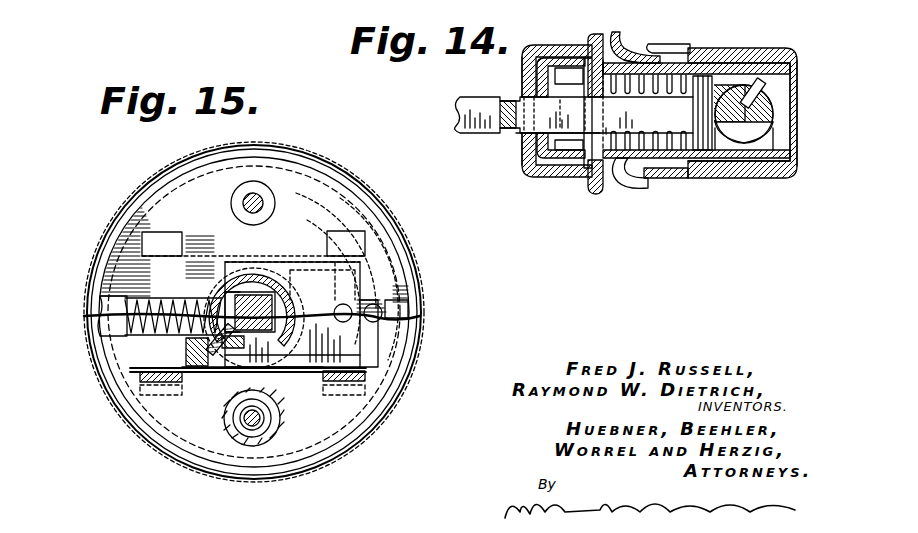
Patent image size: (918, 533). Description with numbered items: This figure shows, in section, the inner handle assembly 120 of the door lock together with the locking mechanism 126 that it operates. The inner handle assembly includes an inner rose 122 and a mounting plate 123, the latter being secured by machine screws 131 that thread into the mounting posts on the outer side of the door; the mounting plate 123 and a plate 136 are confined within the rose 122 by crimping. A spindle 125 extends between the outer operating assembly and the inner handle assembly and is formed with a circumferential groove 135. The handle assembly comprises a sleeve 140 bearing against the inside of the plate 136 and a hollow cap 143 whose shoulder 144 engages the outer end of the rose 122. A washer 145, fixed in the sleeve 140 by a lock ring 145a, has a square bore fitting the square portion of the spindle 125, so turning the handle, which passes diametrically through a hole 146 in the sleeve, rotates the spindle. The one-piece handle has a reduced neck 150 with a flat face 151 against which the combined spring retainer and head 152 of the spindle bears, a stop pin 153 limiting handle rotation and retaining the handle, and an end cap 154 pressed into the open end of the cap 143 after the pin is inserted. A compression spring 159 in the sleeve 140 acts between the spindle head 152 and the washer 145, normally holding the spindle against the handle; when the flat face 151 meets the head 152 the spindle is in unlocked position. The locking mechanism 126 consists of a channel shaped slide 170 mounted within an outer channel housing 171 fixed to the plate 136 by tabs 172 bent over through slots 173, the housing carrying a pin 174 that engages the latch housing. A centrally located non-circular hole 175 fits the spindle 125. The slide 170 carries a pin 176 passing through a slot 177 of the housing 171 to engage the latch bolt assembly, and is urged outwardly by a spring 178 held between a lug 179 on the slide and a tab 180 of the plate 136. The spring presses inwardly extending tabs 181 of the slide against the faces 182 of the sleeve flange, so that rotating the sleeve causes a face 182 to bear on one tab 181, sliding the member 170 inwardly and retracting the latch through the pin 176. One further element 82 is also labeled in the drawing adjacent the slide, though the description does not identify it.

In FIG. 14, the pin 82 is at (585, 168).
In FIG. 14, the inner handle assembly 120 is at (788, 50).
In FIG. 14, the inner rose 122 is at (666, 44).
In FIG. 15, the inner rose 122 is at (372, 321).
In FIG. 14, the mounting plate 123 is at (634, 58).
In FIG. 14, the spindle 125 is at (482, 134).
In FIG. 15, the spindle 125 is at (288, 301).
In FIG. 14, the locking mechanism 126 is at (609, 24).
In FIG. 15, the locking mechanism 126 is at (278, 290).
In FIG. 15, the machine screws 131 is at (264, 203).
In FIG. 14, the circumferential groove 135 is at (508, 99).
In FIG. 14, the plate 136 is at (600, 194).
In FIG. 15, the plate 136 is at (372, 204).
In FIG. 14, the sleeve 140 is at (740, 62).
In FIG. 15, the sleeve 140 is at (300, 371).
In FIG. 14, the hollow cap 143 is at (742, 178).
In FIG. 14, the shoulder 144 is at (680, 178).
In FIG. 14, the washer 145 is at (606, 96).
In FIG. 15, the washer 145 is at (343, 304).
In FIG. 14, the lock ring 145a is at (620, 32).
In FIG. 15, the lock ring 145a is at (228, 281).
In FIG. 14, the hole 146 is at (772, 135).
In FIG. 14, the reduced neck 150 is at (770, 102).
In FIG. 14, the flat face 151 is at (770, 125).
In FIG. 14, the combined spring retainer and head 152 is at (713, 62).
In FIG. 14, the stop pin 153 is at (770, 80).
In FIG. 14, the end cap 154 is at (796, 156).
In FIG. 14, the compression spring 159 is at (650, 182).
In FIG. 14, the channel shaped slide 170 is at (545, 178).
In FIG. 15, the channel shaped slide 170 is at (355, 351).
In FIG. 14, the outer channel housing 171 is at (526, 177).
In FIG. 15, the outer channel housing 171 is at (380, 327).
In FIG. 14, the tabs 172 is at (596, 34).
In FIG. 15, the tabs 172 is at (170, 234).
In FIG. 15, the slots 173 is at (160, 254).
In FIG. 15, the pin 174 is at (410, 299).
In FIG. 14, the non-circular hole 175 is at (520, 135).
In FIG. 15, the pin 176 is at (386, 283).
In FIG. 15, the slot 177 is at (388, 267).
In FIG. 15, the spring 178 is at (170, 335).
In FIG. 15, the lug 179 is at (225, 333).
In FIG. 15, the tab 180 is at (128, 335).
In FIG. 14, the inwardly extending tabs 181 is at (542, 50).
In FIG. 15, the inwardly extending tabs 181 is at (240, 367).
In FIG. 14, the faces 182 is at (578, 62).
In FIG. 15, the faces 182 is at (246, 292).